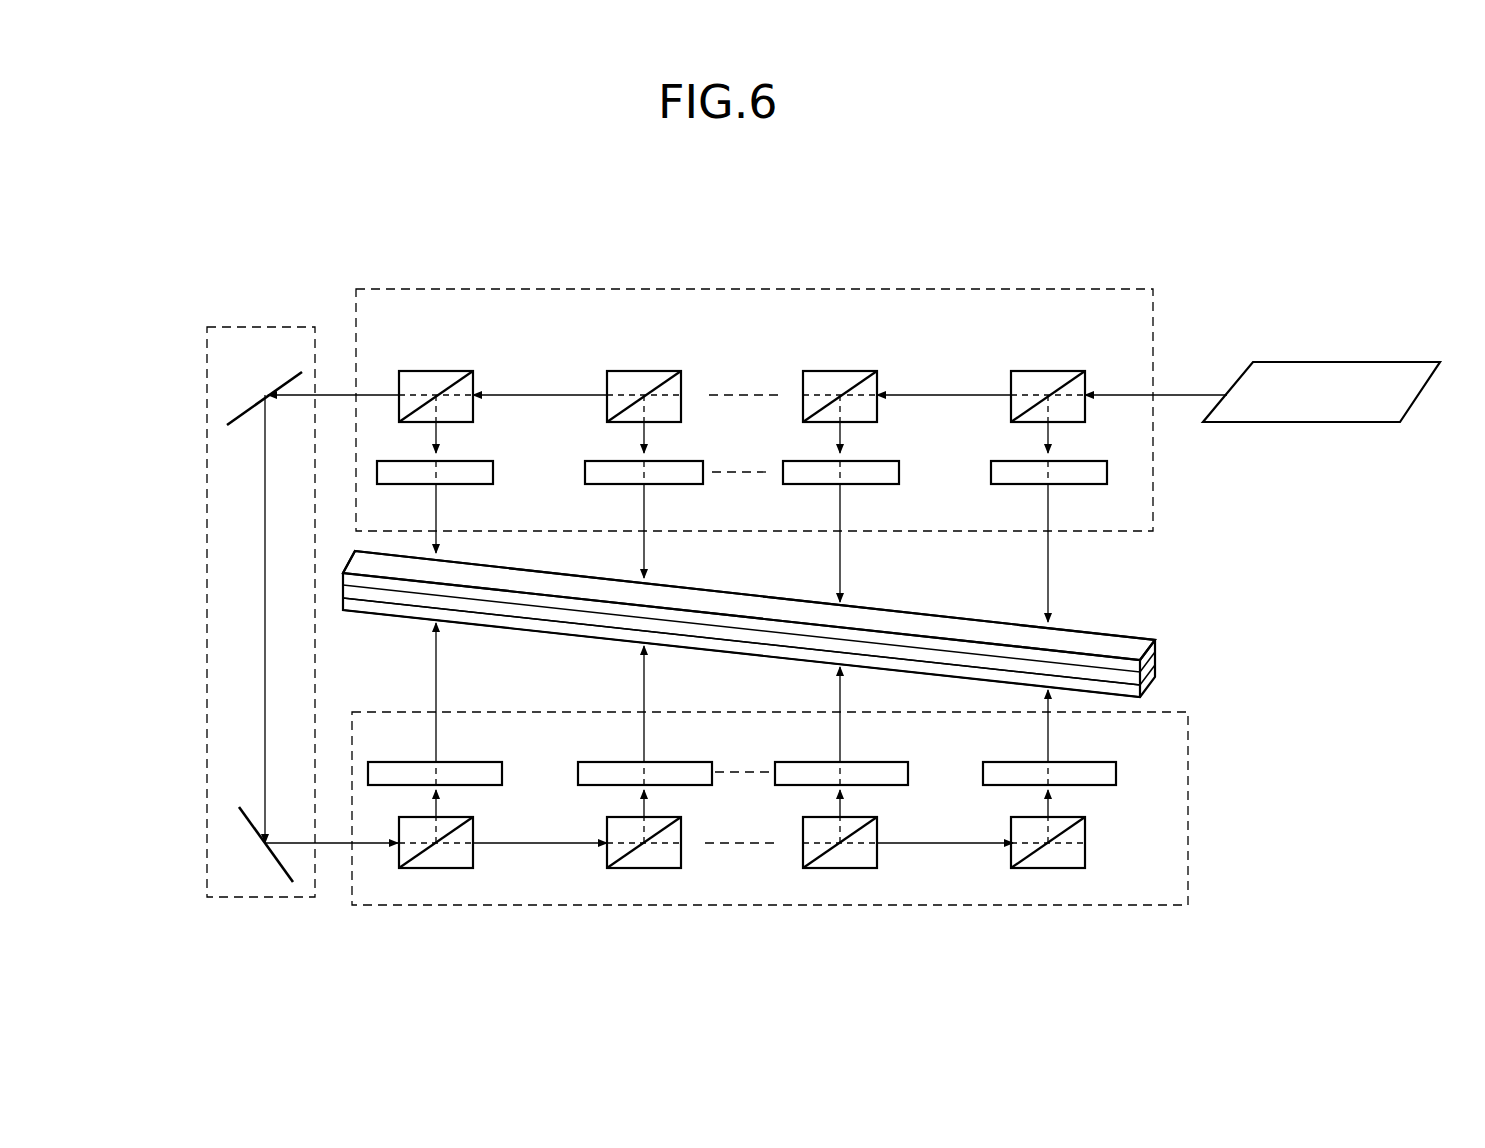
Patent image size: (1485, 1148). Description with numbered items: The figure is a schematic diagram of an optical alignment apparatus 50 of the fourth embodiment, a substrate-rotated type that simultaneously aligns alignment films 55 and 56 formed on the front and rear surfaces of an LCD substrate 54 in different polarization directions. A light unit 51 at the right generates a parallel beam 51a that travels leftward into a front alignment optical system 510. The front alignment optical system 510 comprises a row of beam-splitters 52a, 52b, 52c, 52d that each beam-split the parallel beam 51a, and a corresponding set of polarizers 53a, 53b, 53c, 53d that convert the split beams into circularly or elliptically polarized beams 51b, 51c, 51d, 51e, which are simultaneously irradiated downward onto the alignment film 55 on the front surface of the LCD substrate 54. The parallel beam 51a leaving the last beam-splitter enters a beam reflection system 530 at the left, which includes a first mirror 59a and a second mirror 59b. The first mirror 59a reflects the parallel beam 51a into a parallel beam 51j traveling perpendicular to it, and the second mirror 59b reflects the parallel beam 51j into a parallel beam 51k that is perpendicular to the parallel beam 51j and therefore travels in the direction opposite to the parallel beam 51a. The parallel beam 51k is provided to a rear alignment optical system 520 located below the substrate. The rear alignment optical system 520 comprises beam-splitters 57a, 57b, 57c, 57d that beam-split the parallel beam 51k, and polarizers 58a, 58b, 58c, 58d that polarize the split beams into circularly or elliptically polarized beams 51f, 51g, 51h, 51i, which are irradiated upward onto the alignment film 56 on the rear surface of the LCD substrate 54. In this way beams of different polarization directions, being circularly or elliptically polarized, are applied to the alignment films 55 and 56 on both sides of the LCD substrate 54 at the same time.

The optical alignment apparatus 50 is at (707, 278).
The light unit 51 is at (1320, 363).
The parallel beam 51a is at (1175, 393).
The polarized beam 51b is at (437, 517).
The polarized beam 51c is at (645, 517).
The polarized beam 51d is at (841, 517).
The polarized beam 51e is at (1049, 517).
The polarized beam 51f is at (437, 703).
The polarized beam 51g is at (645, 703).
The polarized beam 51h is at (841, 703).
The polarized beam 51i is at (1049, 713).
The parallel beam 51j is at (265, 665).
The parallel beam 51k is at (322, 842).
The beam-splitter 52a is at (430, 371).
The beam-splitter 52b is at (638, 371).
The beam-splitter 52c is at (834, 371).
The beam-splitter 52d is at (1042, 371).
The polarizer 53a is at (490, 461).
The polarizer 53b is at (699, 461).
The polarizer 53c is at (896, 461).
The polarizer 53d is at (1103, 461).
The LCD substrate 54 is at (1157, 660).
The alignment film 55 is at (1152, 645).
The alignment film 56 is at (1157, 682).
The beam-splitter 57a is at (473, 862).
The beam-splitter 57b is at (681, 862).
The beam-splitter 57c is at (877, 862).
The beam-splitter 57d is at (1085, 862).
The polarizer 58a is at (500, 762).
The polarizer 58b is at (710, 762).
The polarizer 58c is at (903, 762).
The polarizer 58d is at (1112, 770).
The first mirror 59a is at (262, 395).
The second mirror 59b is at (254, 844).
The front alignment optical system 510 is at (995, 288).
The rear alignment optical system 520 is at (1188, 800).
The beam reflection system 530 is at (247, 325).